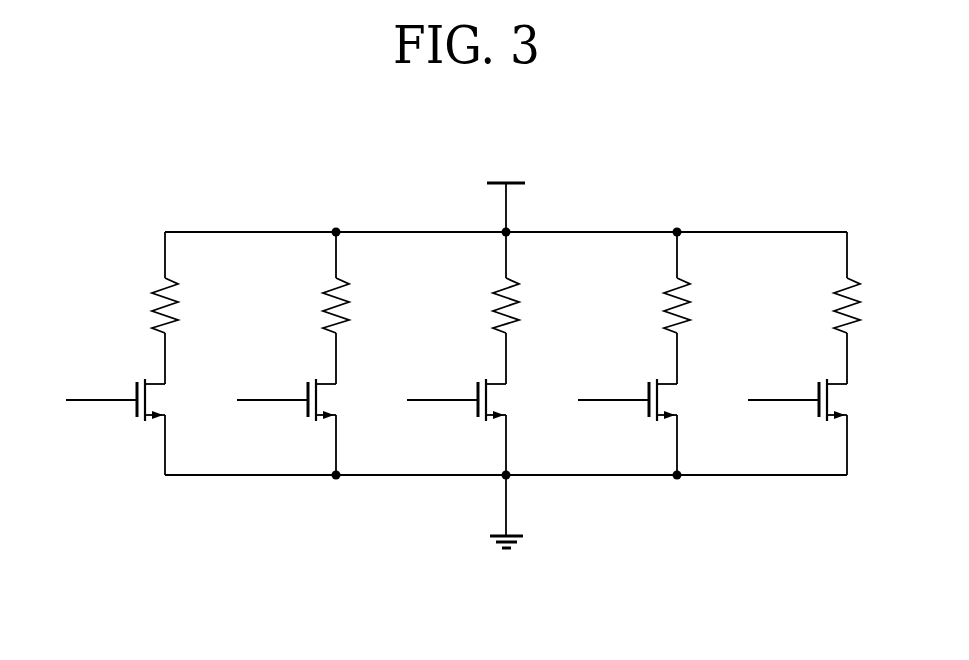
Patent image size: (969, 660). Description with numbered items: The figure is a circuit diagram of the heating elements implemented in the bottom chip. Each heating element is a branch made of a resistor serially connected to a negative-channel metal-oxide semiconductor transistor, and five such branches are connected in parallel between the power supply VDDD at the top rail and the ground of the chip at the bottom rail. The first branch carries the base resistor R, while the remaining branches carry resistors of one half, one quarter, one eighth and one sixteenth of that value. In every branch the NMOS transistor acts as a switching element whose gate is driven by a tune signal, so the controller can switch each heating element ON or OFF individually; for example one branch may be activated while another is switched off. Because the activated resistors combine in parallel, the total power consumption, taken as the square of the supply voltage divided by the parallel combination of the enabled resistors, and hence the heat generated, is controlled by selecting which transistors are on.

The power supply VDDD is at (506, 192).
The resistor R is at (152, 282).